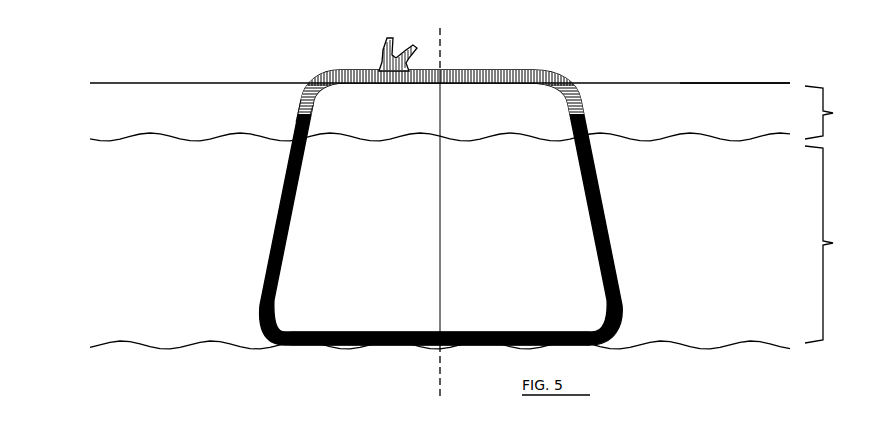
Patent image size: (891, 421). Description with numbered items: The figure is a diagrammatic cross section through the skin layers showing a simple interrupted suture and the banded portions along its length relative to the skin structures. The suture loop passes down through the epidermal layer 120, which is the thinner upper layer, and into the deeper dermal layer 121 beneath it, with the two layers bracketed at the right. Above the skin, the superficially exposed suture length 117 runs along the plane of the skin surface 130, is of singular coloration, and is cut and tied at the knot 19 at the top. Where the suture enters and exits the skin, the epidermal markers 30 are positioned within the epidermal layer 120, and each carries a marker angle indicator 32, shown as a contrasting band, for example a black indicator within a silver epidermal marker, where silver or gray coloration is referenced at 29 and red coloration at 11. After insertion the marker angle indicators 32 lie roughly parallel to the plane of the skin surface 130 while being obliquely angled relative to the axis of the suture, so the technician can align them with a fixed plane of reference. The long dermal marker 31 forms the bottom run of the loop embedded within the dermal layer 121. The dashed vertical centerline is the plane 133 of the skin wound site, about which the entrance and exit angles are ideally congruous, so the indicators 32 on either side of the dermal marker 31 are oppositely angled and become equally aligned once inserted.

The red suture 11 is at (527, 69).
The knot 19 is at (384, 60).
The gray or silver color 29 is at (309, 87).
The epidermal marker 30 is at (440, 67).
The dermal marker 31 is at (366, 331).
The marker angle indicator 32 is at (303, 98).
The superficially exposed suture length 117 is at (335, 73).
The epidermal layer 120 is at (835, 112).
The dermal layer 121 is at (835, 244).
The plane of the skin surface 130 is at (695, 83).
The plane of the skin wound site 133 is at (438, 378).